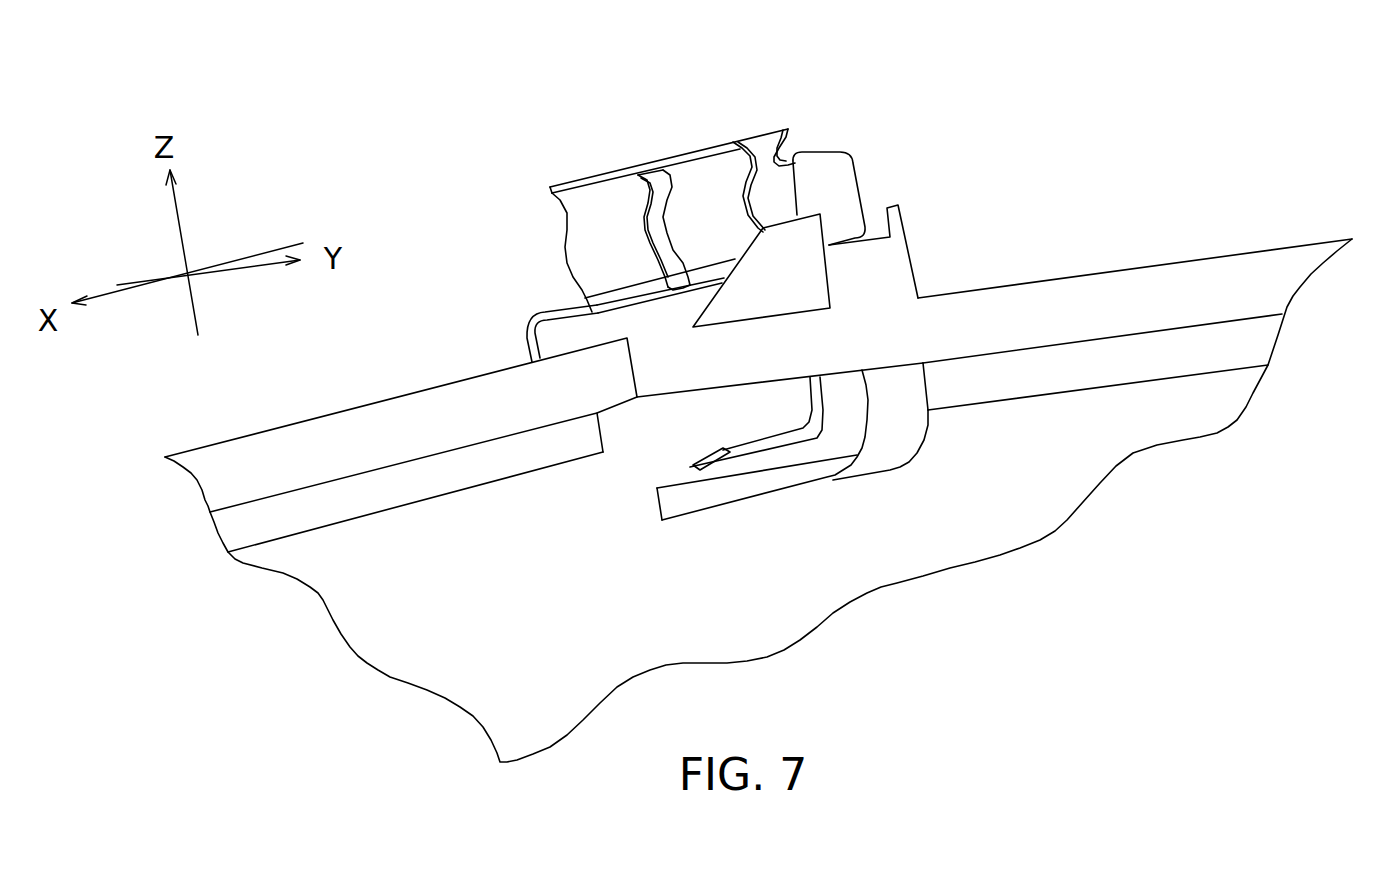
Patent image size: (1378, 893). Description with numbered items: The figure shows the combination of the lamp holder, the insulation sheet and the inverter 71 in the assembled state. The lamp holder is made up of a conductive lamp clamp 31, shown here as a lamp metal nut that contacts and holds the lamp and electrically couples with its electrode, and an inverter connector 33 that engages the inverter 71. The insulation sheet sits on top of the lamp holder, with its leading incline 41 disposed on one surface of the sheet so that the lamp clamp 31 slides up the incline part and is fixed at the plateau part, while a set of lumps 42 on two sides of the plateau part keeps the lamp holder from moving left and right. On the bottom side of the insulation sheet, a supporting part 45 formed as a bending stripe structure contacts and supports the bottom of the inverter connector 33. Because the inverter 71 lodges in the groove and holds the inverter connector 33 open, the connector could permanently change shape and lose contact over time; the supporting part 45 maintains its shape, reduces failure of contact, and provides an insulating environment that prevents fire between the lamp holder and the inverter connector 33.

The lamp clamp 31 is at (684, 195).
The inverter connector 33 is at (652, 539).
The leading incline 41 is at (874, 266).
The lumps 42 is at (897, 192).
The supporting part 45 is at (792, 488).
The inverter 71 is at (758, 500).